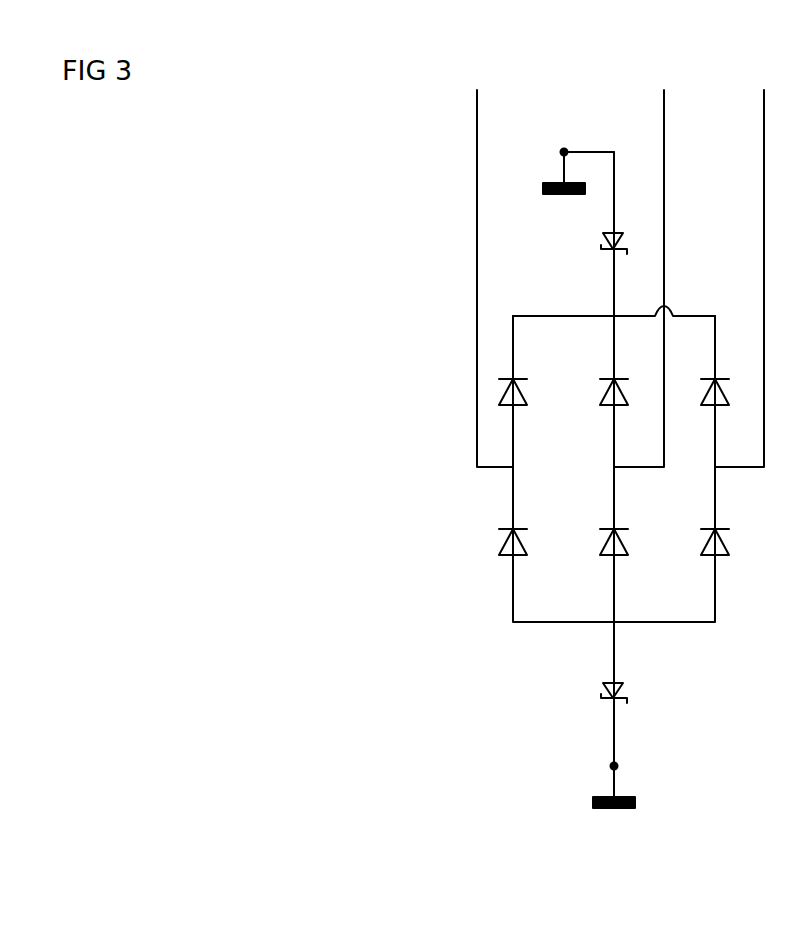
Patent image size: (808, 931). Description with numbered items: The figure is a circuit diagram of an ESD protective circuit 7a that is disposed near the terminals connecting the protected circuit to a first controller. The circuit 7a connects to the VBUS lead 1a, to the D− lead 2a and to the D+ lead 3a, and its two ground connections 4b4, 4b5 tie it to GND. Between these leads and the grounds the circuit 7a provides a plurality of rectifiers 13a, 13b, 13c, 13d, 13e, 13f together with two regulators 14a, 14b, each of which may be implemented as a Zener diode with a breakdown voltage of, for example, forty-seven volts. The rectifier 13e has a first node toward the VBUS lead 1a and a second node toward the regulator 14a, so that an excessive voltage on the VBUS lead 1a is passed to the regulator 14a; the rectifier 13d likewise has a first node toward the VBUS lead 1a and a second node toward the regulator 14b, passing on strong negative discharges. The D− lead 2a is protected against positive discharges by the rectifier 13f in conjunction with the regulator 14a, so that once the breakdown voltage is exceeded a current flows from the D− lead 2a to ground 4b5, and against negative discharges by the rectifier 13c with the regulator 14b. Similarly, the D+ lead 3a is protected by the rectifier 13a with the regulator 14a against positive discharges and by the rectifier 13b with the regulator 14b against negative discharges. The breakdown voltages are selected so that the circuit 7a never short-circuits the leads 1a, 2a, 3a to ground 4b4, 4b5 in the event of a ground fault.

The VBUS lead 1a is at (747, 260).
The D− lead 2a is at (645, 260).
The D+ lead 3a is at (486, 260).
The ground 4b4 is at (614, 806).
The ground 4b5 is at (574, 193).
The ESD protective circuit 7a is at (390, 387).
The rectifier 13a is at (531, 376).
The rectifier 13b is at (532, 525).
The rectifier 13c is at (631, 525).
The rectifier 13d is at (734, 525).
The rectifier 13e is at (733, 376).
The rectifier 13f is at (629, 376).
The regulator 14a is at (633, 229).
The regulator 14b is at (633, 677).